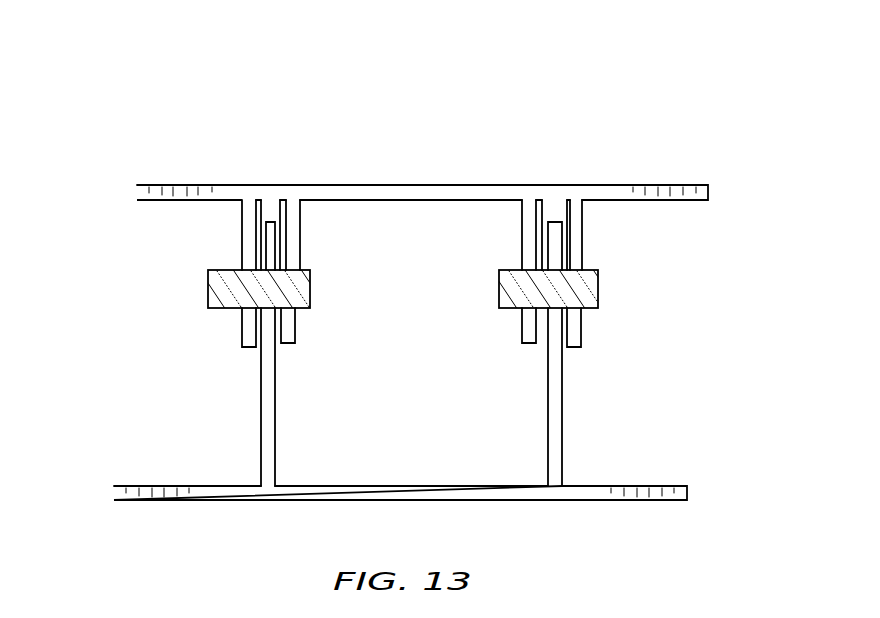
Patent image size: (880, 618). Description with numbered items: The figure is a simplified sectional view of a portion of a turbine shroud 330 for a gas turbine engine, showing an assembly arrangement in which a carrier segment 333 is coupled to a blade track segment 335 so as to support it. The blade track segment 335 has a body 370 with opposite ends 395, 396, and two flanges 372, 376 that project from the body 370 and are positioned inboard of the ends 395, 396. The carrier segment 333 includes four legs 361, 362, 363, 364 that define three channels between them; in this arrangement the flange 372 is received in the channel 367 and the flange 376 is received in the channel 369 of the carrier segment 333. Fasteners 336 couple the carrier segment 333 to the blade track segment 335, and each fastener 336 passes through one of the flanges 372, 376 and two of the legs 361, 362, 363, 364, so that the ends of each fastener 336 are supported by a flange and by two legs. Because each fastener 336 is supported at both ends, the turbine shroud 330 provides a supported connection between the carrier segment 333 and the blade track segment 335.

The turbine shroud 330 is at (538, 103).
The carrier segment 333 is at (373, 199).
The blade track segment 335 is at (562, 447).
The fasteners 336 is at (196, 290).
The leg 361 is at (250, 222).
The leg 362 is at (288, 220).
The leg 363 is at (529, 216).
The leg 364 is at (574, 220).
The channel 367 is at (268, 215).
The channel 369 is at (553, 215).
The body 370 is at (405, 492).
The flange 372 is at (265, 241).
The flange 376 is at (552, 241).
The end 395 is at (100, 495).
The end 396 is at (705, 495).